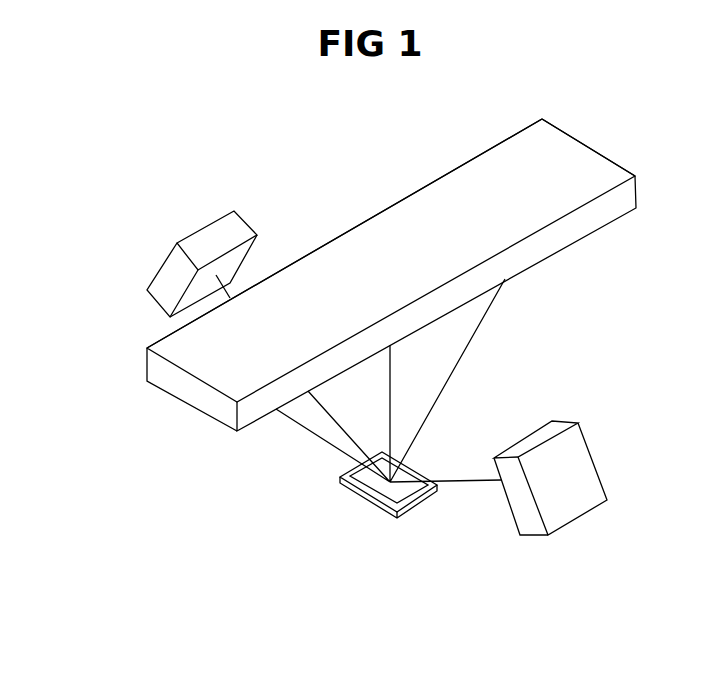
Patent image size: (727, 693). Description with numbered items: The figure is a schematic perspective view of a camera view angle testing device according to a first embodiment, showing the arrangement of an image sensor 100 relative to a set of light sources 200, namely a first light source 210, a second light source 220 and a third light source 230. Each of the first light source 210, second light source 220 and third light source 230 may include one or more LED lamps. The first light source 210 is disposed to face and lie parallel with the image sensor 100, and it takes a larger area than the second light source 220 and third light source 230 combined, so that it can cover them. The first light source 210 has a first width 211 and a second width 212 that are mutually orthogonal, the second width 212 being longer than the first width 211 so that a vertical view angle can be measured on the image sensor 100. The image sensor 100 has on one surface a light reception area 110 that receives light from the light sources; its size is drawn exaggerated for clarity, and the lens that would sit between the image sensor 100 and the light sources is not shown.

The image sensor 100 is at (373, 502).
The light reception area 110 is at (343, 477).
The optical test apparatus 200 is at (276, 612).
The first light source 210 is at (221, 412).
The first width 211 is at (590, 147).
The second width 212 is at (382, 212).
The second light source 220 is at (157, 298).
The third light source 230 is at (520, 523).